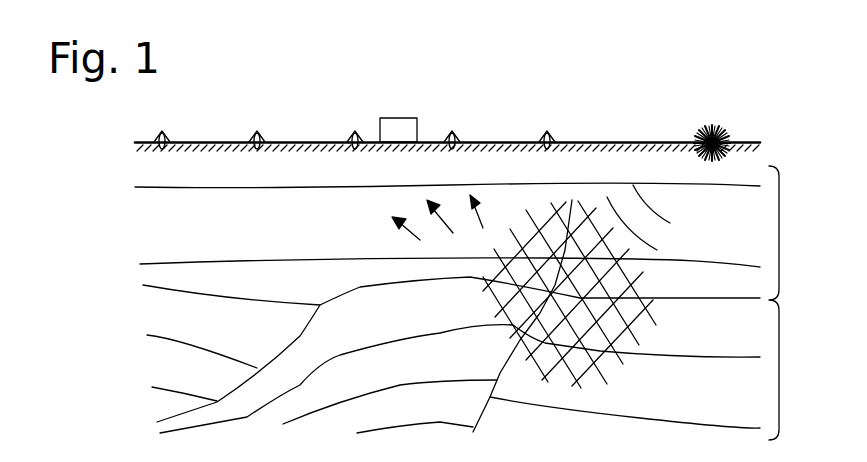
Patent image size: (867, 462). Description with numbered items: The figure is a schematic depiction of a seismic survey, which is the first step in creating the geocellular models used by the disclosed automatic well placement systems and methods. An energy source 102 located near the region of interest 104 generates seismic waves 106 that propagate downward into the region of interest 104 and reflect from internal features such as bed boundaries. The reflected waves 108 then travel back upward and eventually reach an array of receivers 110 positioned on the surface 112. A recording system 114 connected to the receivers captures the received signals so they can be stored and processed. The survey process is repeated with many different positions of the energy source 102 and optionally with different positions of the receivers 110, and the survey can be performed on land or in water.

The energy source 102 is at (725, 135).
The region of interest 104 is at (796, 303).
The seismic waves 106 is at (688, 173).
The reflected waves 108 is at (422, 222).
The array of receivers 110 is at (252, 138).
The surface 112 is at (152, 142).
The recording system 114 is at (400, 117).